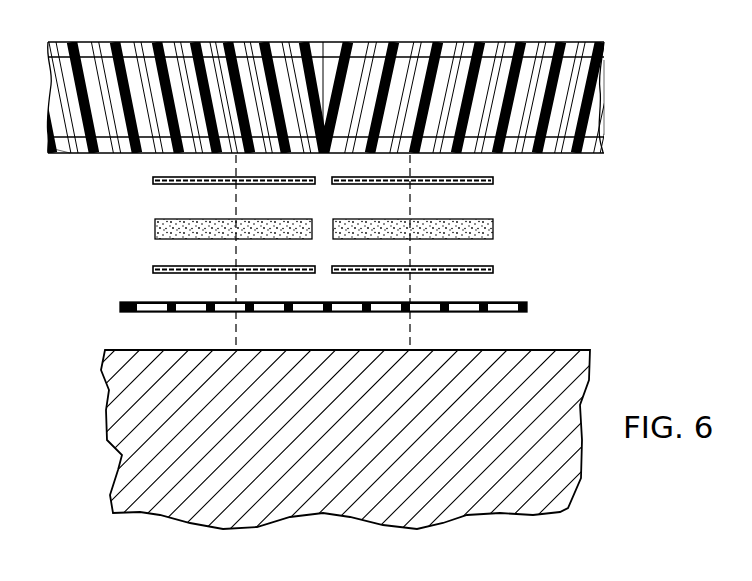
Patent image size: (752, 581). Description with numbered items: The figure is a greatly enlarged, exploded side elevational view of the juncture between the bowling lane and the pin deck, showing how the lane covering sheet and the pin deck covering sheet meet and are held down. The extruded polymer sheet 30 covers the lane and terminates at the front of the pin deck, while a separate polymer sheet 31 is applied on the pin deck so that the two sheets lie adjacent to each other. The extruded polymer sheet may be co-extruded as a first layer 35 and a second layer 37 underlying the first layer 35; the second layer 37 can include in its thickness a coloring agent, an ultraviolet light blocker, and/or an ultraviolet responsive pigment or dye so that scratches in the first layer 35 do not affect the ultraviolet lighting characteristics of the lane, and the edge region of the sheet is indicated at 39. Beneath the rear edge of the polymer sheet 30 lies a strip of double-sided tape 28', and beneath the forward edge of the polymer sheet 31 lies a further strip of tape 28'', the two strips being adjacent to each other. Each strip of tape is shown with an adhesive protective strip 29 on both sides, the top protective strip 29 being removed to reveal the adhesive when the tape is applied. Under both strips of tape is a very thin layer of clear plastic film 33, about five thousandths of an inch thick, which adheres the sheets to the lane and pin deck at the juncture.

The extruded polymer sheet 30 is at (45, 42).
The separate polymer sheet 31 is at (608, 45).
The first layer 35 is at (160, 43).
The second layer 37 is at (227, 42).
The layer edge 39 is at (62, 157).
The adhesive protective strip 29 is at (153, 179).
The double-sided tape 28' is at (196, 236).
The double-sided tape 28'' is at (451, 234).
The clear plastic film 33 is at (527, 307).